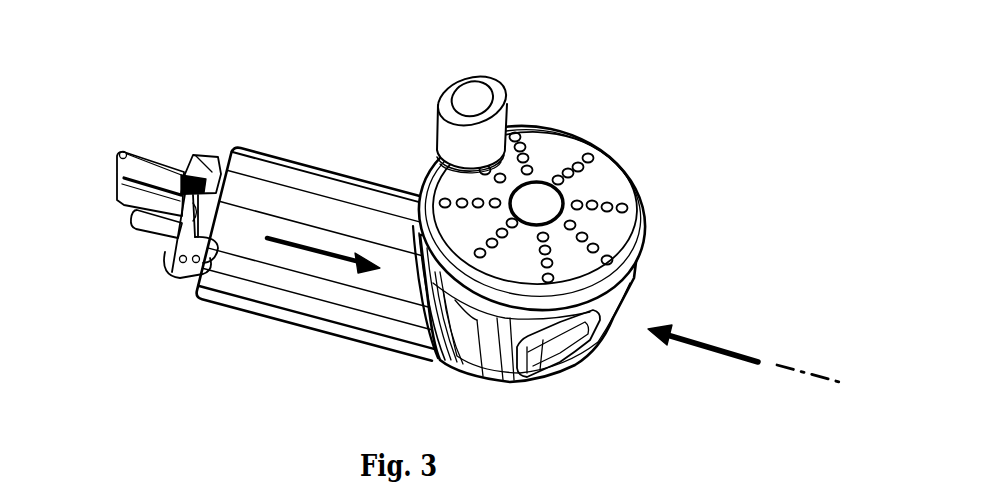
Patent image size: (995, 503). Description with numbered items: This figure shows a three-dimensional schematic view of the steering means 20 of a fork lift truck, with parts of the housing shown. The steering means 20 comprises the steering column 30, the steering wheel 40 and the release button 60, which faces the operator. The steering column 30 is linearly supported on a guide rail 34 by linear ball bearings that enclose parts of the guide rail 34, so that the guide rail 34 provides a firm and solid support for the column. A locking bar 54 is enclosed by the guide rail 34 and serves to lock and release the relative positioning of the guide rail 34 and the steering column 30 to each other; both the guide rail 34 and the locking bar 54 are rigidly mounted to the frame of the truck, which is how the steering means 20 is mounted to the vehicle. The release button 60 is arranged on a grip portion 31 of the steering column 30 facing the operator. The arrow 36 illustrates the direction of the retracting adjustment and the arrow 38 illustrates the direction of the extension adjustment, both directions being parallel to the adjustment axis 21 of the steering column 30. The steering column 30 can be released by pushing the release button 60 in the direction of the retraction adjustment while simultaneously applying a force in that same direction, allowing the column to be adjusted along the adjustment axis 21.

The steering means 20 is at (508, 100).
The adjustment axis 21 is at (798, 376).
The steering column 30 is at (205, 168).
The grip portion 31 is at (470, 337).
The guide rail 34 is at (162, 168).
The arrow 36 is at (723, 345).
The arrow 38 is at (338, 256).
The steering wheel 40 is at (533, 152).
The locking bar 54 is at (136, 200).
The release button 60 is at (560, 358).